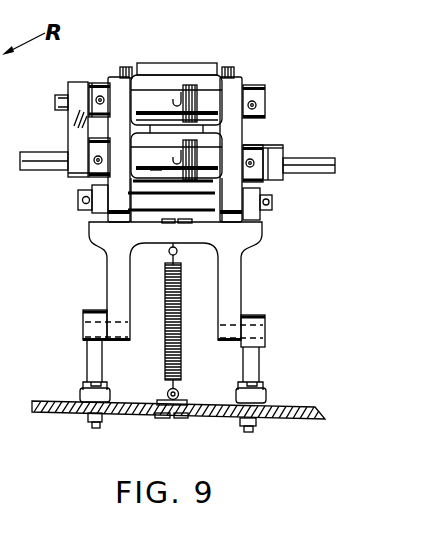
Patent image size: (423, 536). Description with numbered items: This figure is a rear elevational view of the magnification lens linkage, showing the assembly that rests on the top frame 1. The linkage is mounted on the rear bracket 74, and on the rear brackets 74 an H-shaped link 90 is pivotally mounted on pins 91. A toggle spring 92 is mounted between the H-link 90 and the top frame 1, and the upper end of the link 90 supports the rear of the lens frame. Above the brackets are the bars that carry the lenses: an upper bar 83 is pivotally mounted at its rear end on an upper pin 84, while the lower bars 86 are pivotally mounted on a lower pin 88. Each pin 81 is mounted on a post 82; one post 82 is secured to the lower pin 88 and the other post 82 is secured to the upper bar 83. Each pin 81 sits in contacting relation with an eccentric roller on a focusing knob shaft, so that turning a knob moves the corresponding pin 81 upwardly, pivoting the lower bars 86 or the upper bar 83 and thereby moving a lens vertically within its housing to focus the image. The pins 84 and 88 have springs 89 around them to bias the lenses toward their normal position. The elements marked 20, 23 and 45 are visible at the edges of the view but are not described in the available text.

The top frame 1 is at (213, 417).
The frame member 20 is at (10, 475).
The support member 23 is at (11, 300).
The stop member 45 is at (34, 103).
The rear bracket 74 is at (83, 358).
The pin 81 is at (42, 157).
The post 82 is at (82, 83).
The upper bar 83 is at (104, 83).
The upper pin 84 is at (155, 90).
The lower bar 86 is at (255, 146).
The lower pin 88 is at (157, 173).
The spring 89 is at (197, 90).
The H-shaped link 90 is at (252, 232).
The pin 91 is at (113, 341).
The toggle spring 92 is at (185, 303).